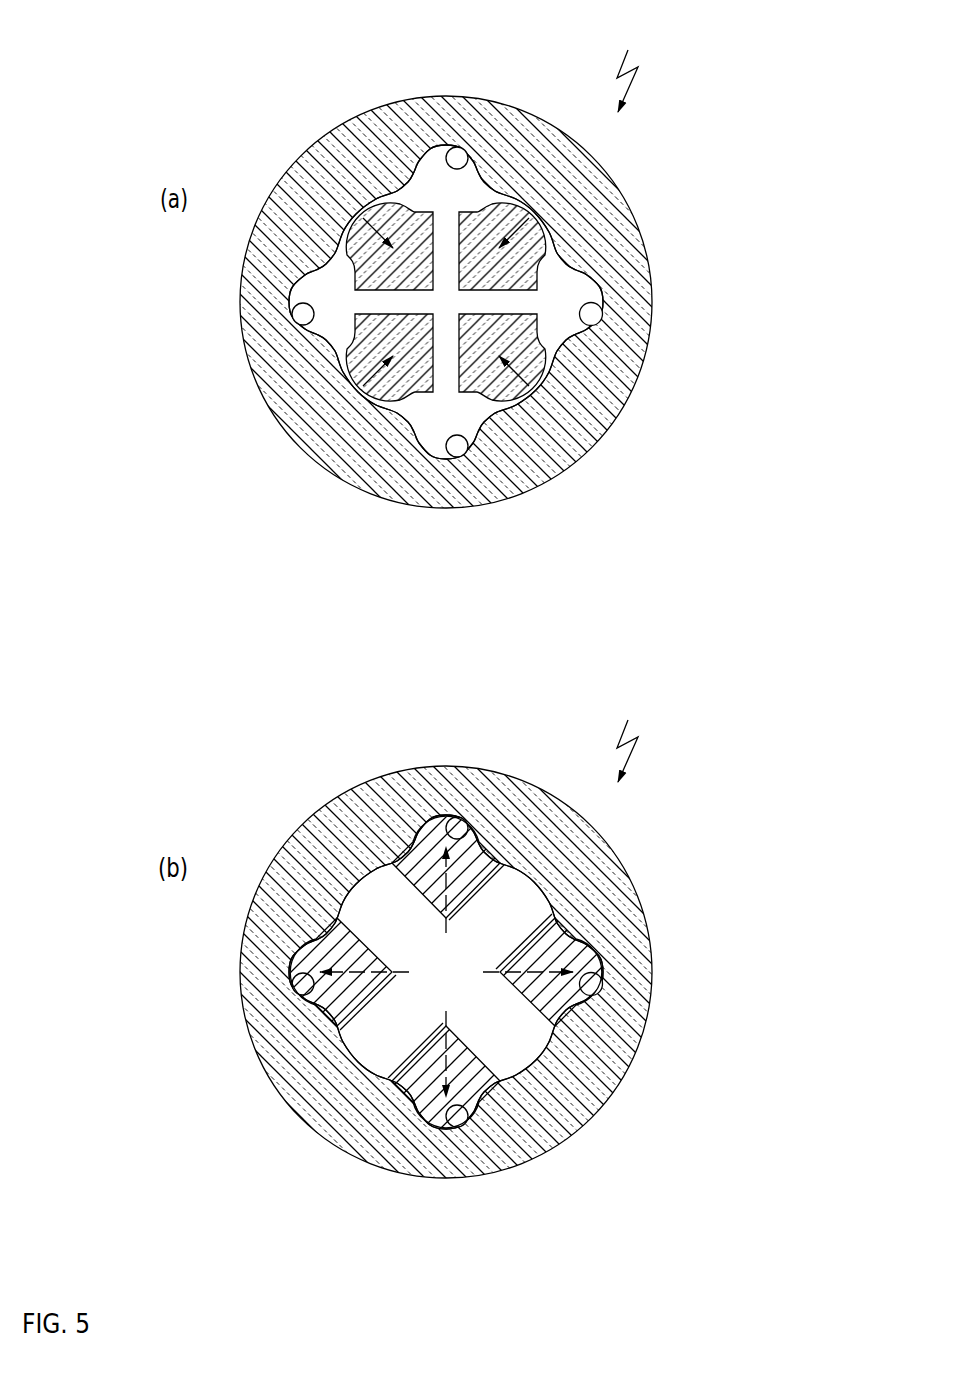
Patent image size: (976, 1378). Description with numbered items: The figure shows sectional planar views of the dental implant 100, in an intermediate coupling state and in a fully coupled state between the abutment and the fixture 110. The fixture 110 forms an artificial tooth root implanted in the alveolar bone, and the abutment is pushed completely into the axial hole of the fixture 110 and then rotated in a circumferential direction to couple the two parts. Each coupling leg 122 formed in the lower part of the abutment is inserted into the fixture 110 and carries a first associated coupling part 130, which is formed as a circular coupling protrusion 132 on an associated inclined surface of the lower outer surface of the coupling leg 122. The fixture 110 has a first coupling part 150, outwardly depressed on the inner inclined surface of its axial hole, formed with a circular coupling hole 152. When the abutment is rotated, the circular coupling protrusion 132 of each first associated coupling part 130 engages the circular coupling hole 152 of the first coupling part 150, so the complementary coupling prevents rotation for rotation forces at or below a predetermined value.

The dental implant 100 is at (652, 51).
The fixture 110 is at (608, 195).
The coupling leg 122 is at (534, 293).
The first associated coupling part 130 is at (600, 987).
The circular coupling protrusion 132 is at (410, 832).
The first coupling part 150 is at (458, 147).
The circular coupling hole 152 is at (604, 317).